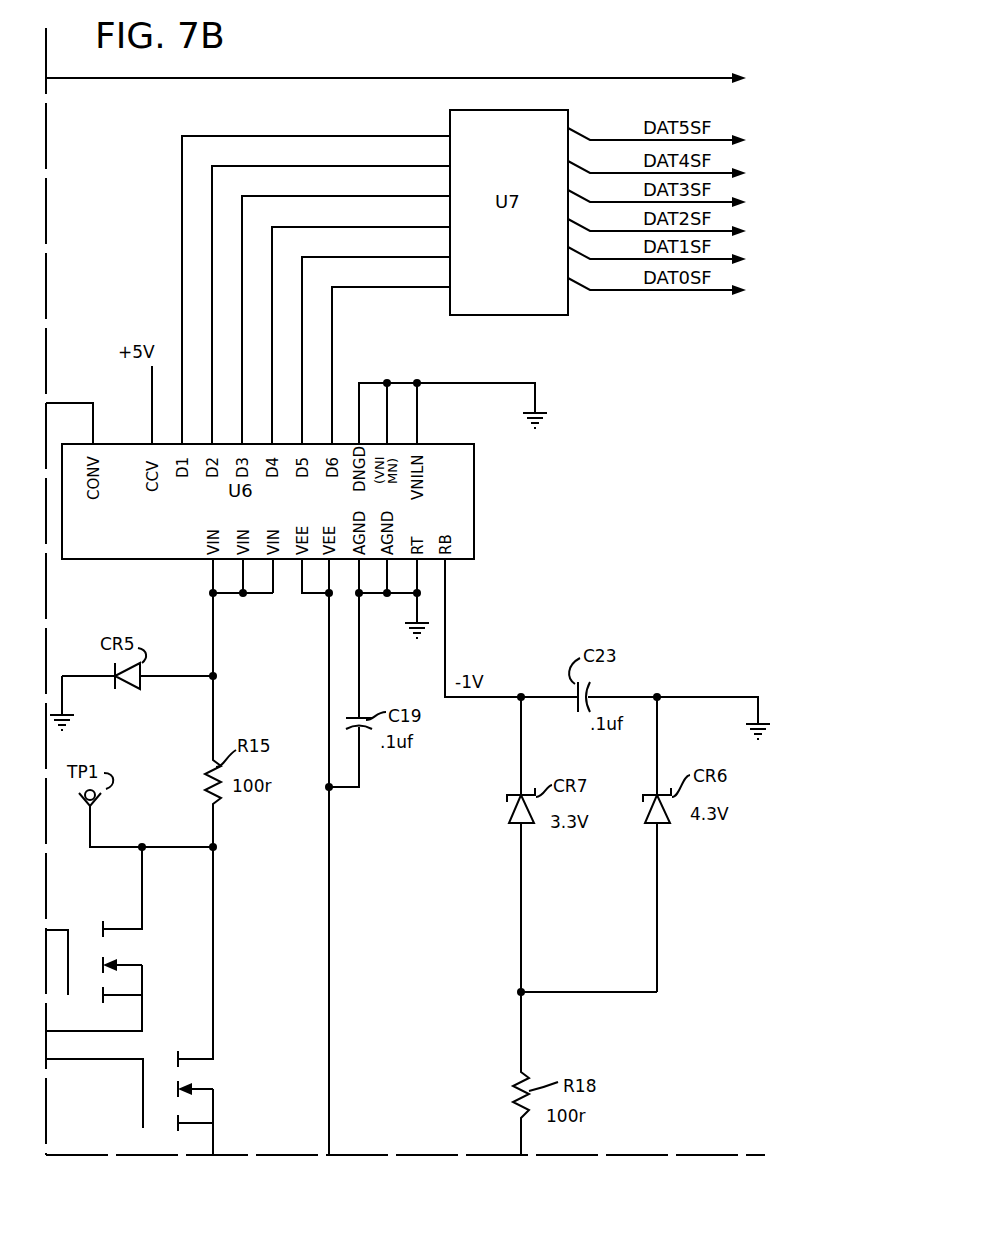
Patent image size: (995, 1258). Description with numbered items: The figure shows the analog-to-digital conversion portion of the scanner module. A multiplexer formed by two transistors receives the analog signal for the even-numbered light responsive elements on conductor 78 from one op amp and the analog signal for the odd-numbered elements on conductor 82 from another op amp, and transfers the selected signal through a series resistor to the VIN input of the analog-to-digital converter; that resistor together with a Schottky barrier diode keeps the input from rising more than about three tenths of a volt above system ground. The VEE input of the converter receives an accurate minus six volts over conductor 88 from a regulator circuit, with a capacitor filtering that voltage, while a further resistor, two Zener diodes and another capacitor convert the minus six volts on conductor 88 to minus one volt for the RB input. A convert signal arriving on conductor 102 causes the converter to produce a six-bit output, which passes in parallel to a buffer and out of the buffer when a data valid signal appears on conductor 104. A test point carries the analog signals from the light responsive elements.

The conductor 104 is at (388, 78).
The conductor 102 is at (92, 403).
The conductor 88 is at (331, 912).
The conductor 78 is at (143, 1017).
The conductor 82 is at (214, 1143).